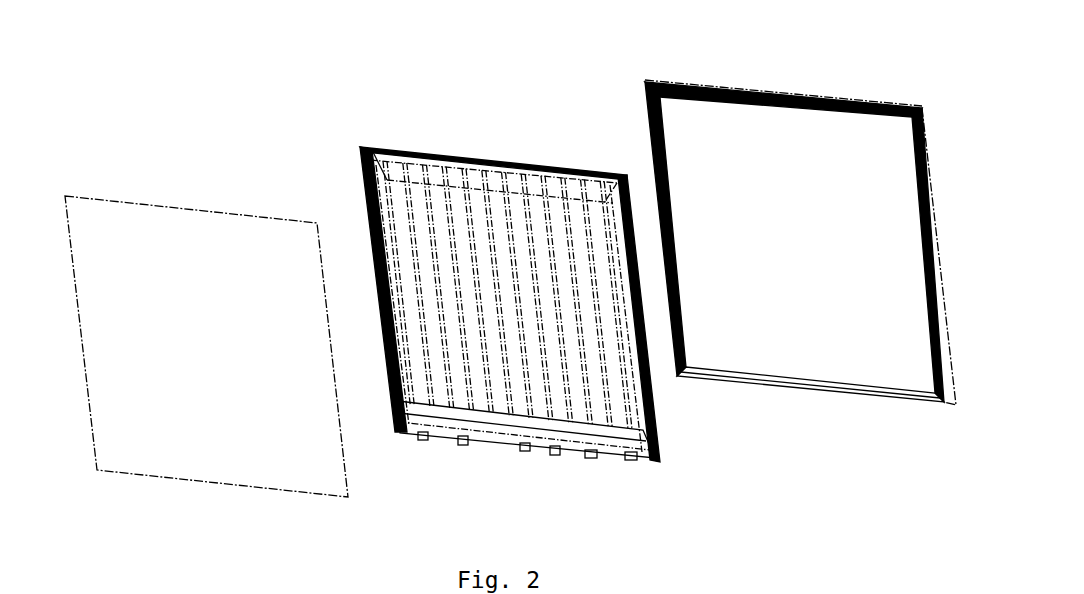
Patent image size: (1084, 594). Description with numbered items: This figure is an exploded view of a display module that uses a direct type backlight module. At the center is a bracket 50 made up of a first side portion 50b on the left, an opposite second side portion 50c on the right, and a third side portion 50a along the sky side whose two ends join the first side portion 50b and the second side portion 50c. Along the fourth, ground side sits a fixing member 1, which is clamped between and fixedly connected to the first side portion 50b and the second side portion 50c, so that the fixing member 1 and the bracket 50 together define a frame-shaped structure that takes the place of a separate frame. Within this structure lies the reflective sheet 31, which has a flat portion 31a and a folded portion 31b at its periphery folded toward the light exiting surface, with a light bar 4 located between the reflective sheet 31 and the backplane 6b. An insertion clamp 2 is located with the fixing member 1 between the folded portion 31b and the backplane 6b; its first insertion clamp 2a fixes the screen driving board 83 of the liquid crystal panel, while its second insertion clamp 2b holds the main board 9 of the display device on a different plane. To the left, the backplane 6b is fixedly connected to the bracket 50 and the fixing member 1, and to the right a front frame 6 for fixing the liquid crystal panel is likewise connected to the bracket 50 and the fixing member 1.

The fixing member 1 is at (516, 306).
The insertion clamp 2 is at (460, 479).
The first insertion clamp 2a is at (423, 440).
The second insertion clamp 2b is at (527, 451).
The light bar 4 is at (457, 190).
The front frame 6 is at (770, 90).
The backplane 6b is at (111, 197).
The main board 9 is at (556, 455).
The reflective sheet 31 is at (476, 259).
The flat portion 31a is at (510, 195).
The folded portion 31b is at (388, 172).
The bracket 50 is at (516, 270).
The third side portion 50a is at (545, 168).
The first side portion 50b is at (352, 218).
The second side portion 50c is at (656, 393).
The screen driving board 83 is at (465, 445).